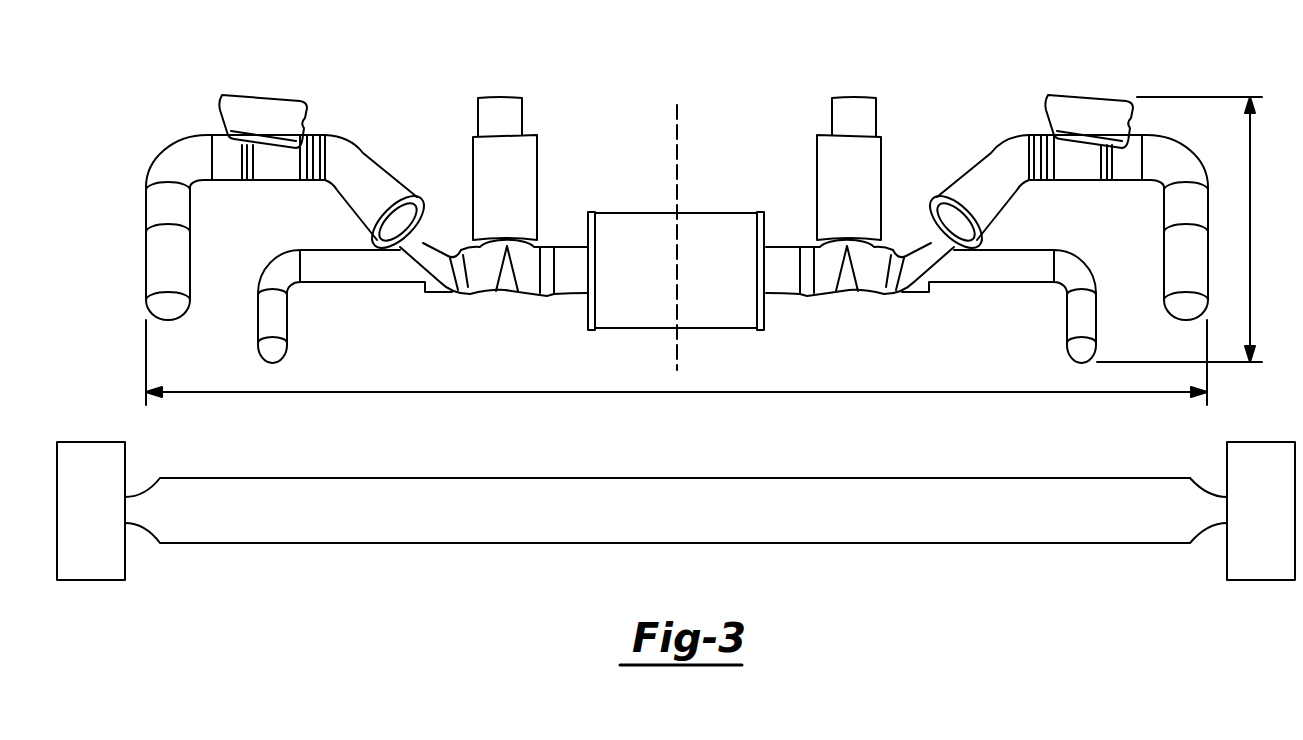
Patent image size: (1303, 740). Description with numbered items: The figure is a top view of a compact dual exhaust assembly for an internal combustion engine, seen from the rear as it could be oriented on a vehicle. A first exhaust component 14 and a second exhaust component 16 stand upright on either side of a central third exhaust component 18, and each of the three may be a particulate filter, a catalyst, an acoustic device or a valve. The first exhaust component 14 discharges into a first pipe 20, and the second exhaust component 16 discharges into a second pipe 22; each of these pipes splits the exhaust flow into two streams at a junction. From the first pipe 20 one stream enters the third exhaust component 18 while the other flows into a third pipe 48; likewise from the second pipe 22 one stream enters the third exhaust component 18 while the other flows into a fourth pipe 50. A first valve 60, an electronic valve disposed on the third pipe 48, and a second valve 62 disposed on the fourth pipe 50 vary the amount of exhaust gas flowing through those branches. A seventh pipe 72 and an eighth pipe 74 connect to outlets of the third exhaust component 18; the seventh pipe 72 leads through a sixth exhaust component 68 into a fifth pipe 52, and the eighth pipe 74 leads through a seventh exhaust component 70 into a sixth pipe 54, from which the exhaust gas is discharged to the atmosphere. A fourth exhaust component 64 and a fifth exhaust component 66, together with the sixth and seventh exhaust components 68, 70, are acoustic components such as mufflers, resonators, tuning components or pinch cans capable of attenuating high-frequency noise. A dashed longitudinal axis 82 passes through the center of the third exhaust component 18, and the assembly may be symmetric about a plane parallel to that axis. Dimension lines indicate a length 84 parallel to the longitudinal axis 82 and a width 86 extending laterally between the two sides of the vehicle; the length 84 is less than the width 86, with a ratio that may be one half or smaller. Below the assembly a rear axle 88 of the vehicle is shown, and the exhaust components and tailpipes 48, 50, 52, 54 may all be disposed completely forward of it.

The first exhaust component 14 is at (866, 158).
The second exhaust component 16 is at (526, 161).
The third exhaust component 18 is at (702, 220).
The first pipe 20 is at (820, 287).
The second pipe 22 is at (455, 283).
The third pipe 48 is at (1172, 270).
The fourth pipe 50 is at (163, 220).
The fifth pipe 52 is at (1083, 317).
The sixth pipe 54 is at (267, 323).
The first valve 60 is at (1093, 107).
The second valve 62 is at (261, 112).
The fourth exhaust component 64 is at (1000, 203).
The fifth exhaust component 66 is at (383, 172).
The sixth exhaust component 68 is at (898, 247).
The seventh exhaust component 70 is at (462, 247).
The seventh pipe 72 is at (802, 247).
The eighth pipe 74 is at (572, 247).
The longitudinal axis 82 is at (677, 128).
The length 84 is at (1250, 137).
The width 86 is at (970, 392).
The rear axle 88 is at (322, 488).